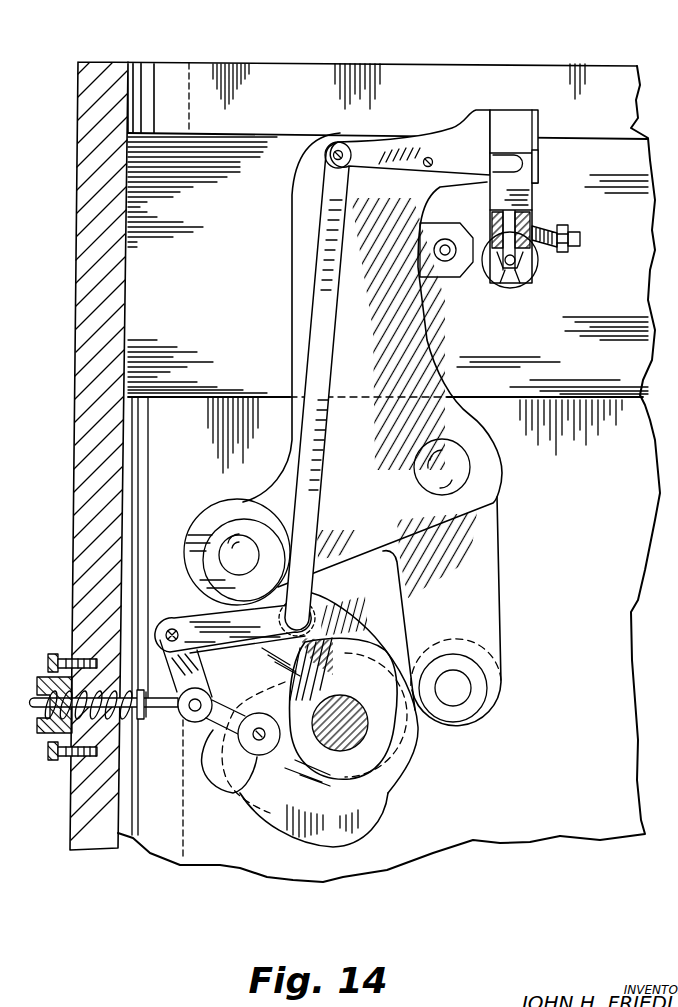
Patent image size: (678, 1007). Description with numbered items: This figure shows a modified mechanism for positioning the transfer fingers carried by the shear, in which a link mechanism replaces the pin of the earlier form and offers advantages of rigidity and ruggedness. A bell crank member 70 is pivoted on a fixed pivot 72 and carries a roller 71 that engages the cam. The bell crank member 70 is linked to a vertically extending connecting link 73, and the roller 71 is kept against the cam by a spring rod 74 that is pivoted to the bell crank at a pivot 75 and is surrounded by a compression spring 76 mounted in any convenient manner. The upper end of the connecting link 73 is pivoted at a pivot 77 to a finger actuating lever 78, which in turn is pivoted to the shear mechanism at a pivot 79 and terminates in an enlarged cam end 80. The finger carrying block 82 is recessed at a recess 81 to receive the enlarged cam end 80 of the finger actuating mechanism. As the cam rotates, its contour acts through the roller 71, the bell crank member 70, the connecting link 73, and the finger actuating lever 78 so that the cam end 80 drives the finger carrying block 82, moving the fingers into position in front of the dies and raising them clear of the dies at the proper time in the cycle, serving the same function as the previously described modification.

The bell crank member 70 is at (210, 745).
The roller 71 is at (233, 797).
The fixed pivot 72 is at (182, 622).
The connecting link 73 is at (326, 462).
The spring rod 74 is at (145, 722).
The pivot 75 is at (216, 704).
The compression spring 76 is at (140, 694).
The pivot 77 is at (337, 150).
The finger actuating lever 78 is at (393, 152).
The pivot 79 is at (432, 160).
The enlarged cam end 80 is at (540, 170).
The recess 81 is at (538, 165).
The finger carrying block 82 is at (517, 138).